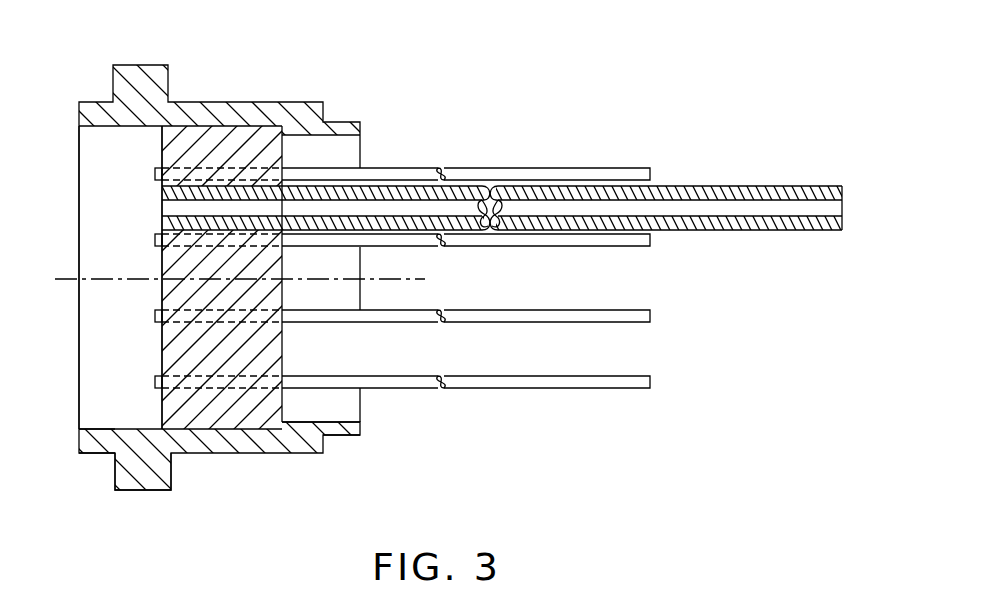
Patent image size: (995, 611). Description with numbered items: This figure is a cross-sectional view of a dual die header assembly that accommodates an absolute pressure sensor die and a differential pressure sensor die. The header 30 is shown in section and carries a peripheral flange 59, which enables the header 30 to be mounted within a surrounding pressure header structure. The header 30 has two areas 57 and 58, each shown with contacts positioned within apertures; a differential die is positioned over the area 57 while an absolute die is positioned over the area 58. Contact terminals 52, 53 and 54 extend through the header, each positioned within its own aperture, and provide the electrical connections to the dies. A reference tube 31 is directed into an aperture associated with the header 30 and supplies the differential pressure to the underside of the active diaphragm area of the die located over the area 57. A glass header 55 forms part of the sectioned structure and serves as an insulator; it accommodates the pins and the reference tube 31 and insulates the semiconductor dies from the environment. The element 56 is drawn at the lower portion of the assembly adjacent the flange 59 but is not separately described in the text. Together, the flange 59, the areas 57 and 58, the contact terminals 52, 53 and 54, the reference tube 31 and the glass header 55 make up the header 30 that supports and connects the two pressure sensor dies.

The header 30 is at (497, 305).
The reference tube 31 is at (388, 183).
The contact terminal 52 is at (615, 168).
The contact terminal 53 is at (650, 315).
The contact terminal 54 is at (513, 388).
The glass header 55 is at (257, 433).
The mounting protrusion 56 is at (147, 482).
The area 57 is at (162, 205).
The area 58 is at (162, 345).
The peripheral flange 59 is at (115, 468).